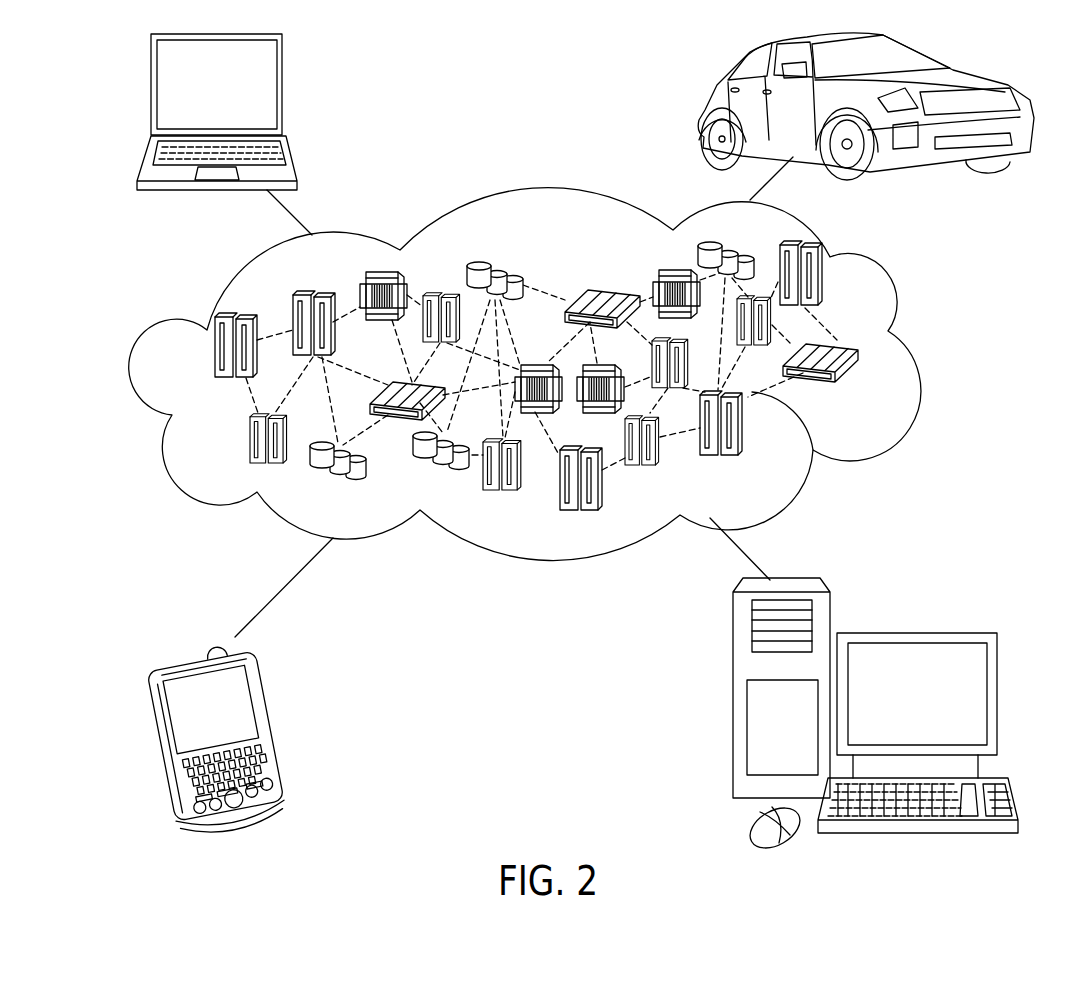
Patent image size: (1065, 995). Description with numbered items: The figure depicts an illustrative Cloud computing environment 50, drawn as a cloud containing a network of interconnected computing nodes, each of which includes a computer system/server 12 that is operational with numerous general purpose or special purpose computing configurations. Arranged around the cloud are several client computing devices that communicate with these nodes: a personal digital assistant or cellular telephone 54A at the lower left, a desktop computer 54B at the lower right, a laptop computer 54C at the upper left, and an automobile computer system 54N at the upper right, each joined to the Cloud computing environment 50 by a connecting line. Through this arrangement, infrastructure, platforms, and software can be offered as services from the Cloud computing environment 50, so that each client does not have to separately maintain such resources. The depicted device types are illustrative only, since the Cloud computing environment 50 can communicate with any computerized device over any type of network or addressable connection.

The computer system/server 12 is at (858, 385).
The Cloud computing environment 50 is at (912, 353).
The personal digital assistant (PDA) or cellular telephone 54A is at (272, 724).
The desktop computer 54B is at (913, 633).
The laptop computer 54C is at (282, 91).
The automobile computer system 54N is at (704, 108).